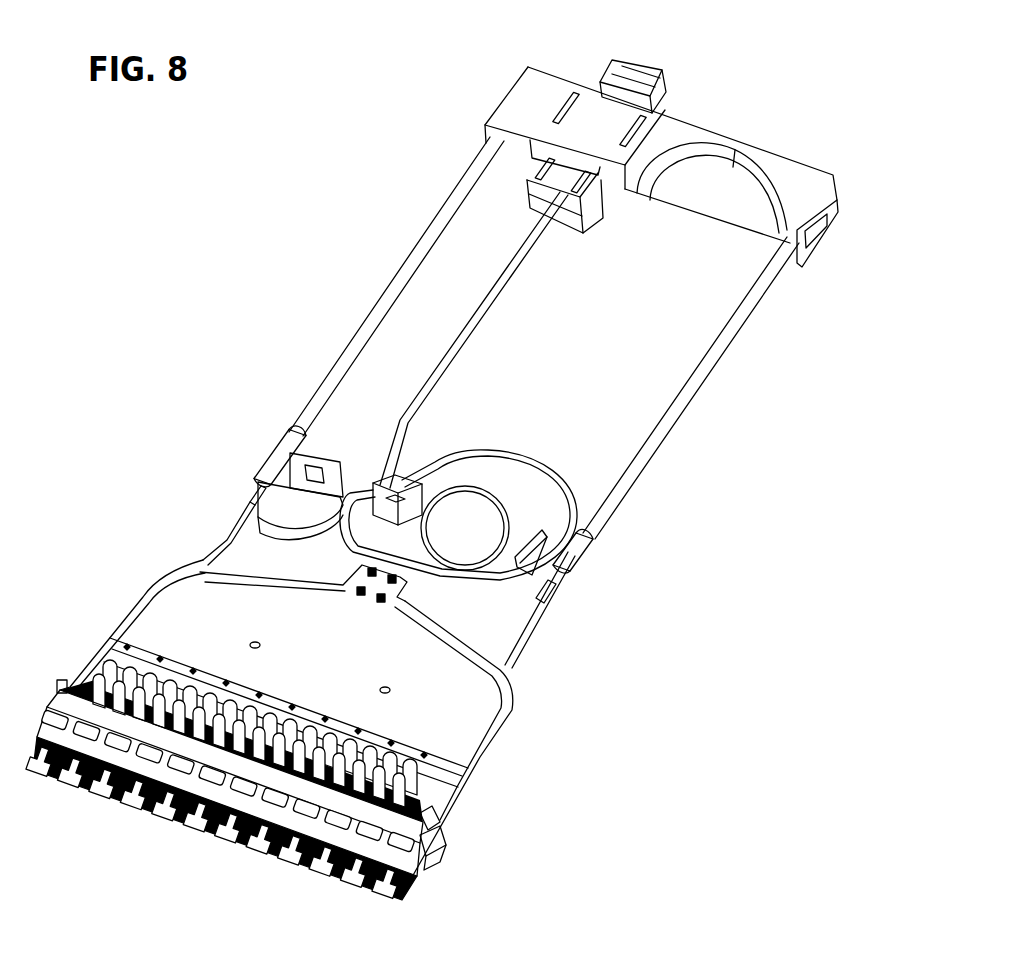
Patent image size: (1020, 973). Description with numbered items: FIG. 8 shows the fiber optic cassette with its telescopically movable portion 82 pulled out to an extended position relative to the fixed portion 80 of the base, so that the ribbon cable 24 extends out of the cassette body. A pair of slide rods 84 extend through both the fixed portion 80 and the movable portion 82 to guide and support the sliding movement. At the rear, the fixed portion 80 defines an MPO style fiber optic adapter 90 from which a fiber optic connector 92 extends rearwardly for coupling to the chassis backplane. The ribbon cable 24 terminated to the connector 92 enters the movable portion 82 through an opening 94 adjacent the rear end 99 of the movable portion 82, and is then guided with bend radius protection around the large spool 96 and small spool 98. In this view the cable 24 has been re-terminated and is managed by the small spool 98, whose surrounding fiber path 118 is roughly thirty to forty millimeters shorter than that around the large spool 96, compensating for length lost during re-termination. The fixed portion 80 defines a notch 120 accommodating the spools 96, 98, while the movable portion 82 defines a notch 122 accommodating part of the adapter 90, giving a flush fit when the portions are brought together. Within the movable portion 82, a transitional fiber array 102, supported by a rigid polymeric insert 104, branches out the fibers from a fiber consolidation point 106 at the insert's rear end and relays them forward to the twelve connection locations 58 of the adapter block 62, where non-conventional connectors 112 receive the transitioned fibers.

The ribbon cable 24 is at (475, 323).
The connection locations 58 is at (233, 840).
The adapter block 62 is at (430, 850).
The fixed portion 80 is at (806, 260).
The movable portion 82 is at (540, 630).
The slide rods 84 is at (697, 373).
The fiber optic adapter 90 is at (600, 112).
The fiber optic connector 92 is at (660, 73).
The opening 94 is at (343, 503).
The large spool 96 is at (527, 480).
The small spool 98 is at (477, 547).
The rear end 99 is at (423, 475).
The transitional fiber array 102 is at (160, 630).
The rigid polymeric insert 104 is at (480, 720).
The fiber consolidation point 106 is at (393, 587).
The non-conventional connectors 112 is at (425, 817).
The fiber path 118 is at (487, 490).
The notch 120 is at (700, 193).
The notch 122 is at (398, 490).